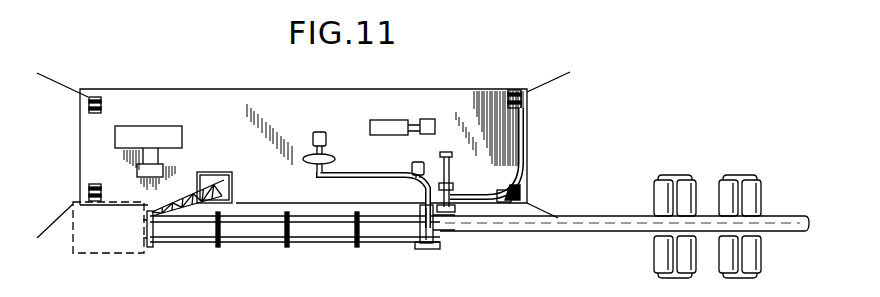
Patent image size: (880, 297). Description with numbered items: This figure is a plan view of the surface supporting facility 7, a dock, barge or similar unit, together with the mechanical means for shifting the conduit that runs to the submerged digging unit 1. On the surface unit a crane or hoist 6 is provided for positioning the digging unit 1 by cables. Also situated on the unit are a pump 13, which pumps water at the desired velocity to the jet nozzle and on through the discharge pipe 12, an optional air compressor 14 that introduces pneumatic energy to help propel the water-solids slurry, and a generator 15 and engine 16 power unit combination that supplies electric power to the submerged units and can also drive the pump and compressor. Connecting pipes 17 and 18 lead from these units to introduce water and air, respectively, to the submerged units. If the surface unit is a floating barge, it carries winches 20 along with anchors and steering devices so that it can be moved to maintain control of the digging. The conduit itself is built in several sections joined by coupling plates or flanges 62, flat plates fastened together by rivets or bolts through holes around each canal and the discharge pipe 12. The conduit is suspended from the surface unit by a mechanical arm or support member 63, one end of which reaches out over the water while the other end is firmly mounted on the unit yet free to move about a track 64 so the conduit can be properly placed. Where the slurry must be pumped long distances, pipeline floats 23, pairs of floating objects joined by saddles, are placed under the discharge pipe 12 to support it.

The digging unit 1 is at (98, 241).
The crane or hoist 6 is at (214, 188).
The surface supporting facility 7 is at (528, 116).
The discharge pipe 12 is at (566, 217).
The pump 13 is at (320, 131).
The air compressor 14 is at (376, 121).
The generator 15 is at (175, 128).
The engine 16 is at (162, 170).
The connecting pipe 17 is at (342, 175).
The connecting pipe 18 is at (438, 244).
The winches 20 is at (96, 97).
The pipeline floats 23 is at (722, 185).
The coupling plates or flanges 62 is at (219, 247).
The mechanical arm or support member 63 is at (452, 171).
The track 64 is at (529, 178).